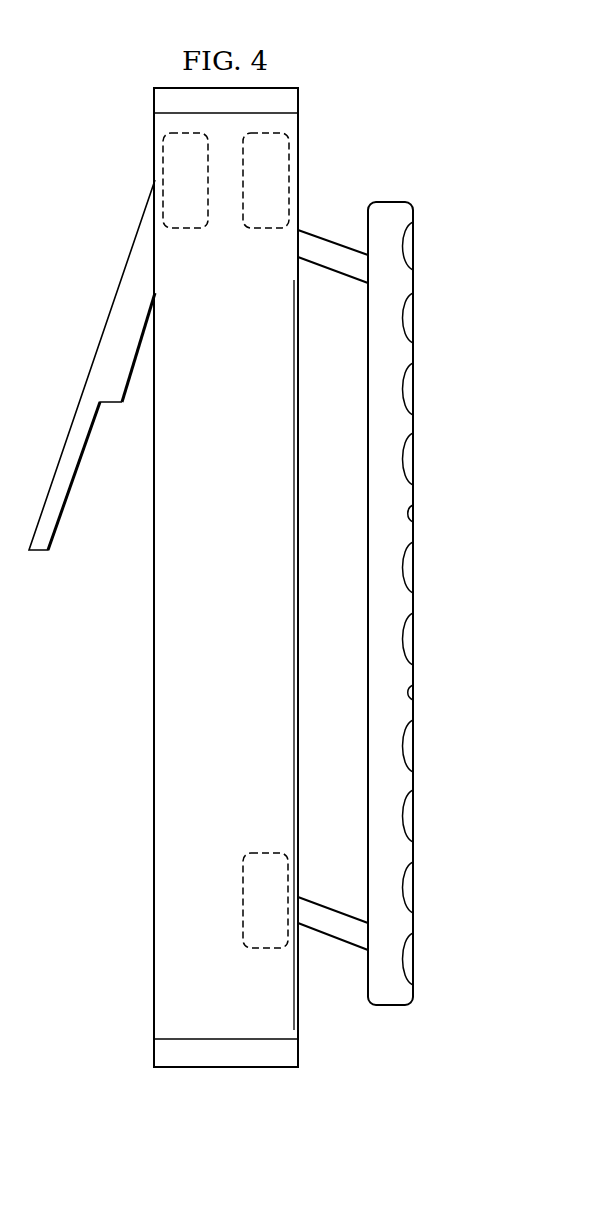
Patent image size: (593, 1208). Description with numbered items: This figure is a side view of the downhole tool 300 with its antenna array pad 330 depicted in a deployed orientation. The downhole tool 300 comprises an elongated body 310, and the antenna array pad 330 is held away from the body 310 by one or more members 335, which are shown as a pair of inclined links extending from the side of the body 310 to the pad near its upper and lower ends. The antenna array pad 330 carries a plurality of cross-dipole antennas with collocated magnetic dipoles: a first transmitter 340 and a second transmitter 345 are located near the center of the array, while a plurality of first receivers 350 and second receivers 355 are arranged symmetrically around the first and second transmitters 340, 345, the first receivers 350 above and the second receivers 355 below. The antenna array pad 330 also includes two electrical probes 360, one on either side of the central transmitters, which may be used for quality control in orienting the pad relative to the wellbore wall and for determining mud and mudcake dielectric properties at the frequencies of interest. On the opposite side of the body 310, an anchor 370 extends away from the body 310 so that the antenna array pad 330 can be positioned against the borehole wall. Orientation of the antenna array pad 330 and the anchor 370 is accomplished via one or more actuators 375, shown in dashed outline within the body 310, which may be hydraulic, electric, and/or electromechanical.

The downhole tool 300 is at (322, 51).
The body 310 is at (243, 588).
The antenna array pad 330 is at (390, 202).
The members 335 is at (333, 242).
The first transmitter 340 is at (410, 565).
The second transmitter 345 is at (410, 637).
The first receivers 350 is at (410, 247).
The second receivers 355 is at (410, 742).
The electrical probes 360 is at (409, 513).
The anchor 370 is at (77, 477).
The actuators 375 is at (185, 229).